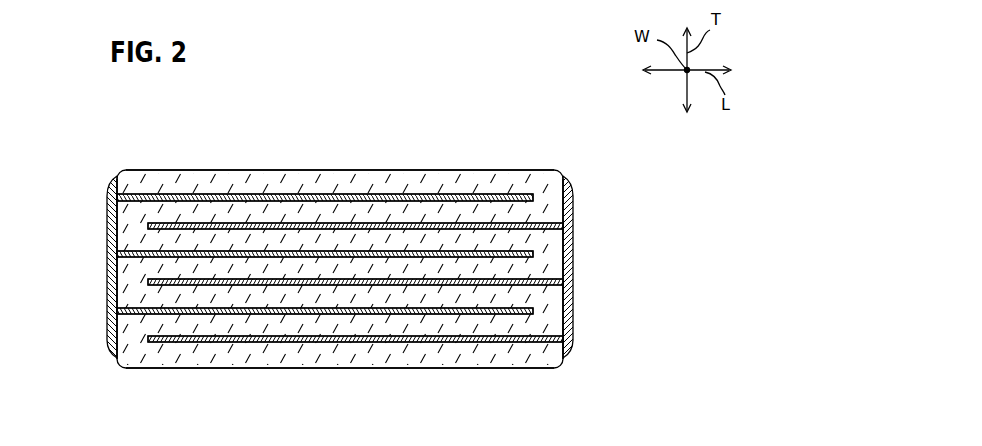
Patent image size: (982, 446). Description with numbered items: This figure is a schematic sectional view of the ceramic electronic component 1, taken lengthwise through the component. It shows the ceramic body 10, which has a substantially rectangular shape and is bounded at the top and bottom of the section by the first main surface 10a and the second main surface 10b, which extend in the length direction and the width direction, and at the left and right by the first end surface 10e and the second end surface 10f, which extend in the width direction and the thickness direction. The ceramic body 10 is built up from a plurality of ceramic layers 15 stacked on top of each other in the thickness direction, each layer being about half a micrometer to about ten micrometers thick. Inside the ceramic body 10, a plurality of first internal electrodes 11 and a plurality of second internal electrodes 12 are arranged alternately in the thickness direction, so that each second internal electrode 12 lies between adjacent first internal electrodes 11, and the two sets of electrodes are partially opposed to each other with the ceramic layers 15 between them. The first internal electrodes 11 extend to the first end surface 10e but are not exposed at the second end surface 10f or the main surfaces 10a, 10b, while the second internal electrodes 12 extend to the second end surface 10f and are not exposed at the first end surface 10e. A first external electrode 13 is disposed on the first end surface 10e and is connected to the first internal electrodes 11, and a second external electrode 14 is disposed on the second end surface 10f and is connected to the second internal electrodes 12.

The ceramic electronic component 1 is at (337, 251).
The ceramic body 10 is at (337, 266).
The first main surface 10a is at (317, 170).
The second main surface 10b is at (398, 368).
The first end surface 10e is at (110, 222).
The second end surface 10f is at (572, 202).
The first internal electrode 11 is at (208, 194).
The second internal electrode 12 is at (280, 333).
The first external electrode 13 is at (108, 290).
The second external electrode 14 is at (575, 280).
The ceramic layer 15 is at (213, 300).